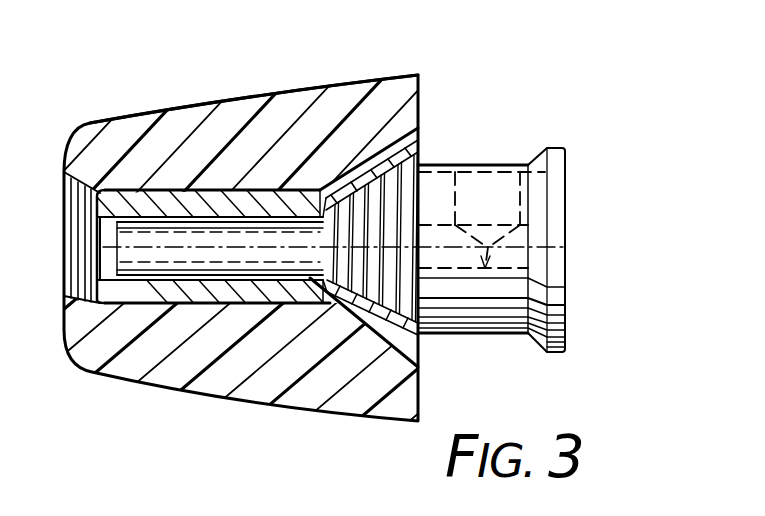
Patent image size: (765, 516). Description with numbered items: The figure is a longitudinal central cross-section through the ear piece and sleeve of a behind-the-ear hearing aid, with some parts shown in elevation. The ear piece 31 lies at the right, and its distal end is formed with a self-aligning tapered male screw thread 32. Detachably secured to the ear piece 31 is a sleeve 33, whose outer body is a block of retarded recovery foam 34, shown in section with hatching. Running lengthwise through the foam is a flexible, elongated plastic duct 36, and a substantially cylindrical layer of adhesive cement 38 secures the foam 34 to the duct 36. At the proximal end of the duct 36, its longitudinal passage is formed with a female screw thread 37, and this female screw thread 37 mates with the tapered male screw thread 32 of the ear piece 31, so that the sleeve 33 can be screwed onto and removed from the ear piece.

The ear piece 31 is at (500, 337).
The tapered male screw thread 32 is at (410, 332).
The sleeve 33 is at (332, 82).
The retarded recovery foam 34 is at (308, 229).
The flexible elongated plastic duct 36 is at (147, 293).
The female screw thread 37 is at (382, 152).
The layer of adhesive cement 38 is at (178, 307).